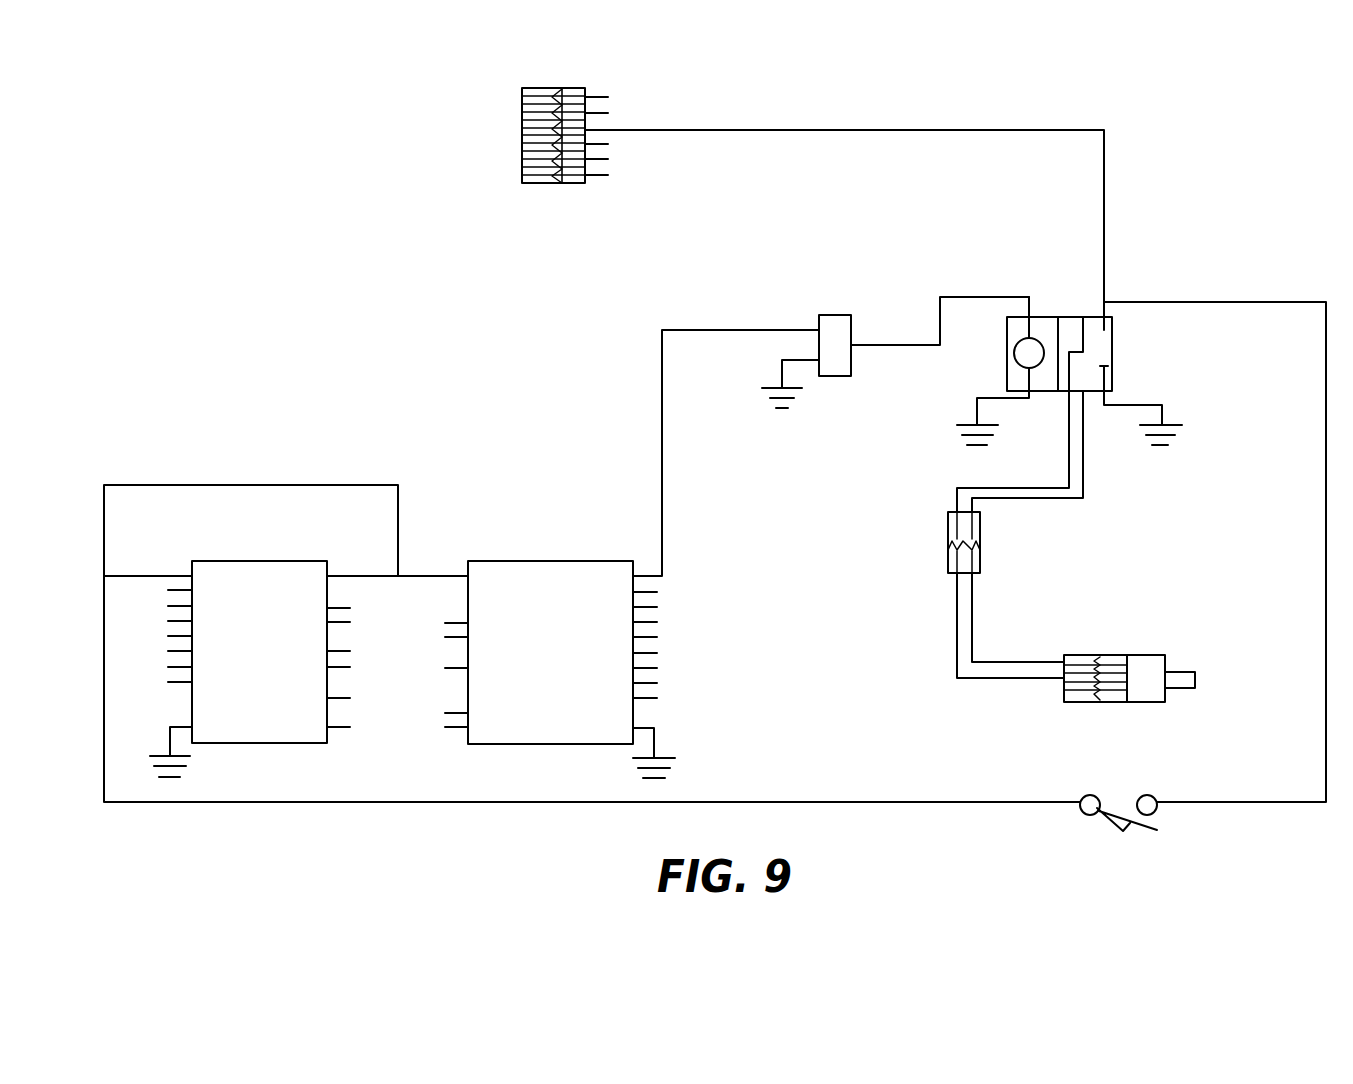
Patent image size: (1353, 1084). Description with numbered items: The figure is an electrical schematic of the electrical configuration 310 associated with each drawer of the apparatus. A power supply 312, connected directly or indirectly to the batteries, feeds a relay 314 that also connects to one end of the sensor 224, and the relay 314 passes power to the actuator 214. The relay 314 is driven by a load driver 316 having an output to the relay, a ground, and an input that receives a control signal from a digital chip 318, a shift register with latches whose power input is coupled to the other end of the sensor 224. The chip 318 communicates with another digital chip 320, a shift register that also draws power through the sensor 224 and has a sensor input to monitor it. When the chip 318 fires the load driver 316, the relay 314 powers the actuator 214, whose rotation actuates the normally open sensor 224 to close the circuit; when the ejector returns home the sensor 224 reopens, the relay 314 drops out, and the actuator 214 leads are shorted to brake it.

The electrical configuration 310 is at (197, 826).
The power supply 312 is at (559, 212).
The relay 314 is at (1078, 303).
The load driver 316 is at (834, 300).
The digital chip 318 is at (570, 541).
The digital chip 320 is at (311, 760).
The actuator 214 is at (1048, 701).
The sensor 224 is at (1172, 822).